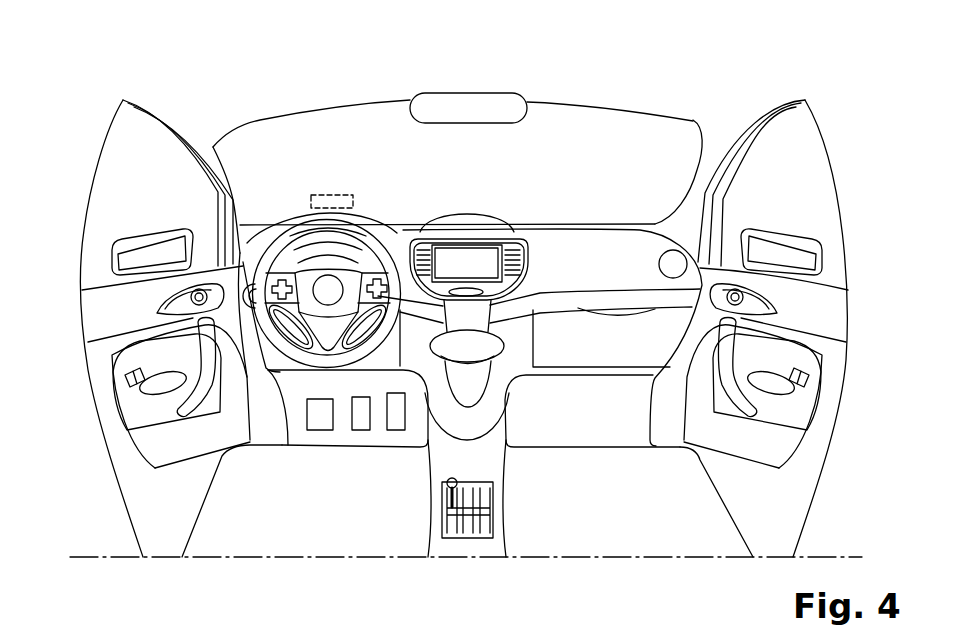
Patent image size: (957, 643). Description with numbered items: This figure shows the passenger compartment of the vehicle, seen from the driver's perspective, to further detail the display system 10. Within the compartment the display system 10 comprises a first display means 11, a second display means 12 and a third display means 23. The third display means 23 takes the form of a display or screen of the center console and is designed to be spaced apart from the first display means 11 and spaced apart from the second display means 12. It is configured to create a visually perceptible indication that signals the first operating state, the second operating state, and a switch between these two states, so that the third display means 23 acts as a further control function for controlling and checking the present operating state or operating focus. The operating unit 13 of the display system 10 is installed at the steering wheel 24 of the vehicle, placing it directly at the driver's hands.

The display system 10 is at (309, 154).
The first display means 11 is at (301, 255).
The second display means 12 is at (330, 195).
The operating unit 13 is at (376, 274).
The third display means 23 is at (468, 265).
The steering wheel 24 is at (259, 263).